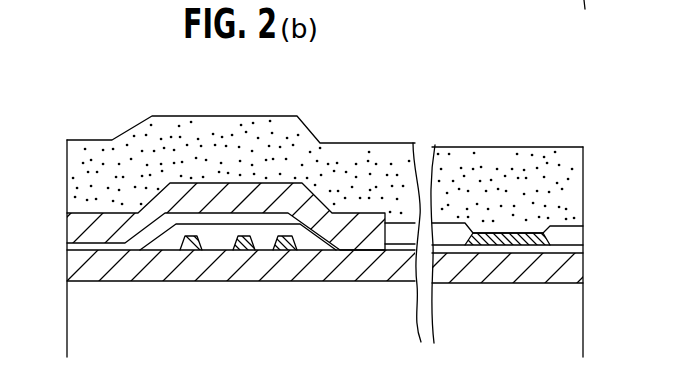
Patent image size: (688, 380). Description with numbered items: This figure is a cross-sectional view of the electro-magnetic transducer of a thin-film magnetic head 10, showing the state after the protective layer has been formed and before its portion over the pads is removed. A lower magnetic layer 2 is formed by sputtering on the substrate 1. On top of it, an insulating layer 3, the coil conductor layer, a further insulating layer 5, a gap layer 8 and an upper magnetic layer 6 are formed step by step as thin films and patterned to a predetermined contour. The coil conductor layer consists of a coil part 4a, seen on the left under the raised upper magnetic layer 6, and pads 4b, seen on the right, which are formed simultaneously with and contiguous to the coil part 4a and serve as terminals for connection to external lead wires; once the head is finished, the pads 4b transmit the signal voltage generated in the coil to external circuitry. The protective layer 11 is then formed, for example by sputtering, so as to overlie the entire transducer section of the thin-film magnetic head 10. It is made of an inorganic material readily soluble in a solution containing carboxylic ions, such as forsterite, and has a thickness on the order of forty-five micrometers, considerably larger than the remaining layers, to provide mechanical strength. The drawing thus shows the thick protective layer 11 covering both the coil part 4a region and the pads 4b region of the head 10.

The substrate 1 is at (68, 316).
The lower magnetic layer 2 is at (68, 268).
The insulating layer 3 is at (237, 250).
The coil part 4a is at (184, 250).
The pads 4b is at (537, 245).
The insulating layer 5 is at (268, 240).
The upper magnetic layer 6 is at (68, 214).
The gap layer 8 is at (68, 248).
The thin-film magnetic head 10 is at (533, 140).
The protective layer 11 is at (248, 123).